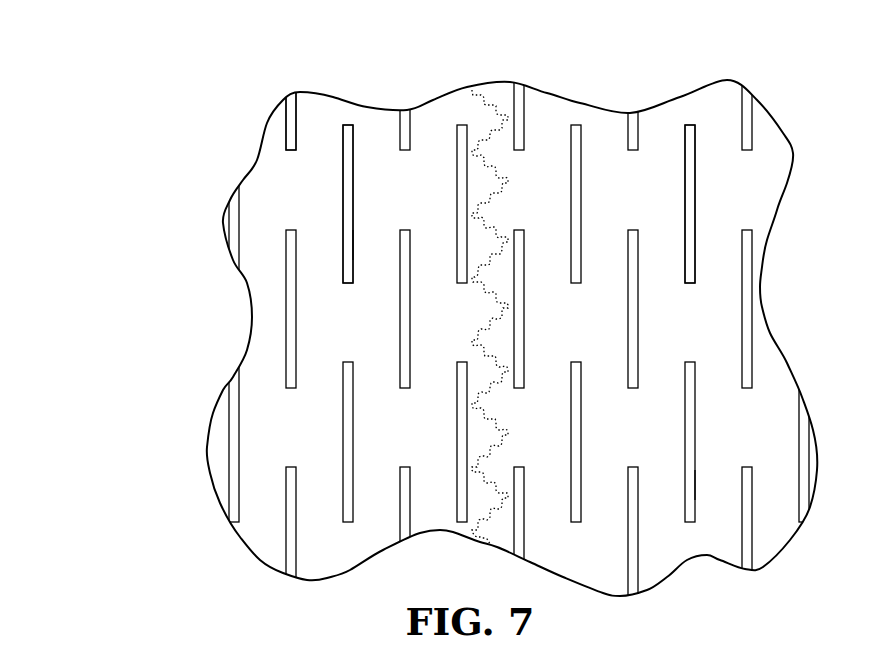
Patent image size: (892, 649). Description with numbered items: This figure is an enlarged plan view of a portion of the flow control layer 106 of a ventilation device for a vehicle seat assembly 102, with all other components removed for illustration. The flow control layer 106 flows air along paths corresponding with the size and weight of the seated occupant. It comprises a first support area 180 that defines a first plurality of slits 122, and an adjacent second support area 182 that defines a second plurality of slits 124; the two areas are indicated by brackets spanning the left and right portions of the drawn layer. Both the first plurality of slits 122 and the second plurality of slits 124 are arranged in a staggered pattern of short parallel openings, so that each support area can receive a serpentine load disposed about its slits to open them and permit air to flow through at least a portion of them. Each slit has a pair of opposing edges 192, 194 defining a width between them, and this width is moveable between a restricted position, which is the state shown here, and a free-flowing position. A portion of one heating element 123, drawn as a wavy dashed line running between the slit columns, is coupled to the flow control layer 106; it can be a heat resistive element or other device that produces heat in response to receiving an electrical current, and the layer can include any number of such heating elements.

The device 102 is at (120, 156).
The flow control layer 106 is at (239, 170).
The first plurality of slits 122 is at (400, 125).
The heating element 123 is at (472, 112).
The second plurality of slits 124 is at (633, 247).
The first support area 180 is at (530, 57).
The second support area 182 is at (815, 57).
The opposing edge 192 is at (347, 253).
The opposing edge 194 is at (352, 243).